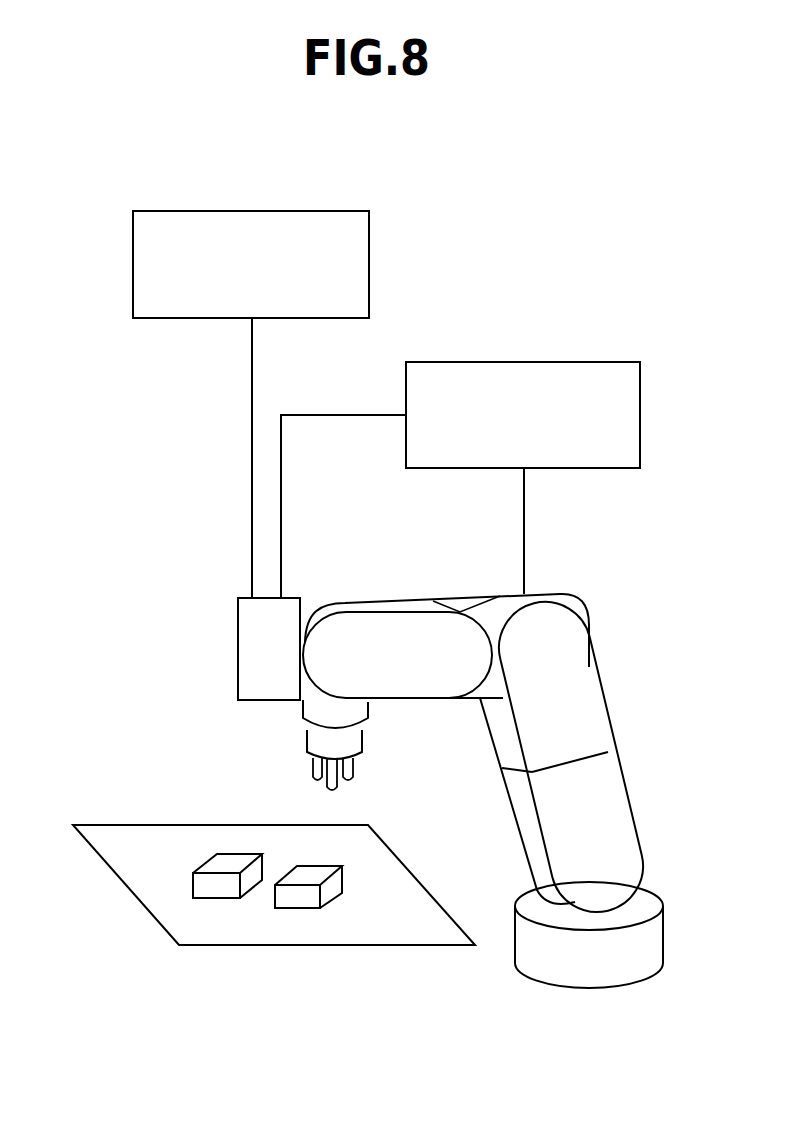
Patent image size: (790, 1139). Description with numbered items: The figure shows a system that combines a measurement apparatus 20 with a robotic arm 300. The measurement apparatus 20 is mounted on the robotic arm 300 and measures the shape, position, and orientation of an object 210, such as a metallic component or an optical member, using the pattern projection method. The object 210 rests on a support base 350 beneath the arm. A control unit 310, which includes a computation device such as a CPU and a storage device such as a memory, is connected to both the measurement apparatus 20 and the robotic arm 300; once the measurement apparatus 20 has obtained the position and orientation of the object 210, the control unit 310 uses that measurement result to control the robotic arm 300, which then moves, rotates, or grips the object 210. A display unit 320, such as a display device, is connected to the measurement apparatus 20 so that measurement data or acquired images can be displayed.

The display unit 320 is at (250, 211).
The control unit 310 is at (524, 362).
The measurement apparatus 20 is at (238, 643).
The robotic arm 300 is at (598, 708).
The support base 350 is at (138, 877).
The object 210 is at (230, 865).